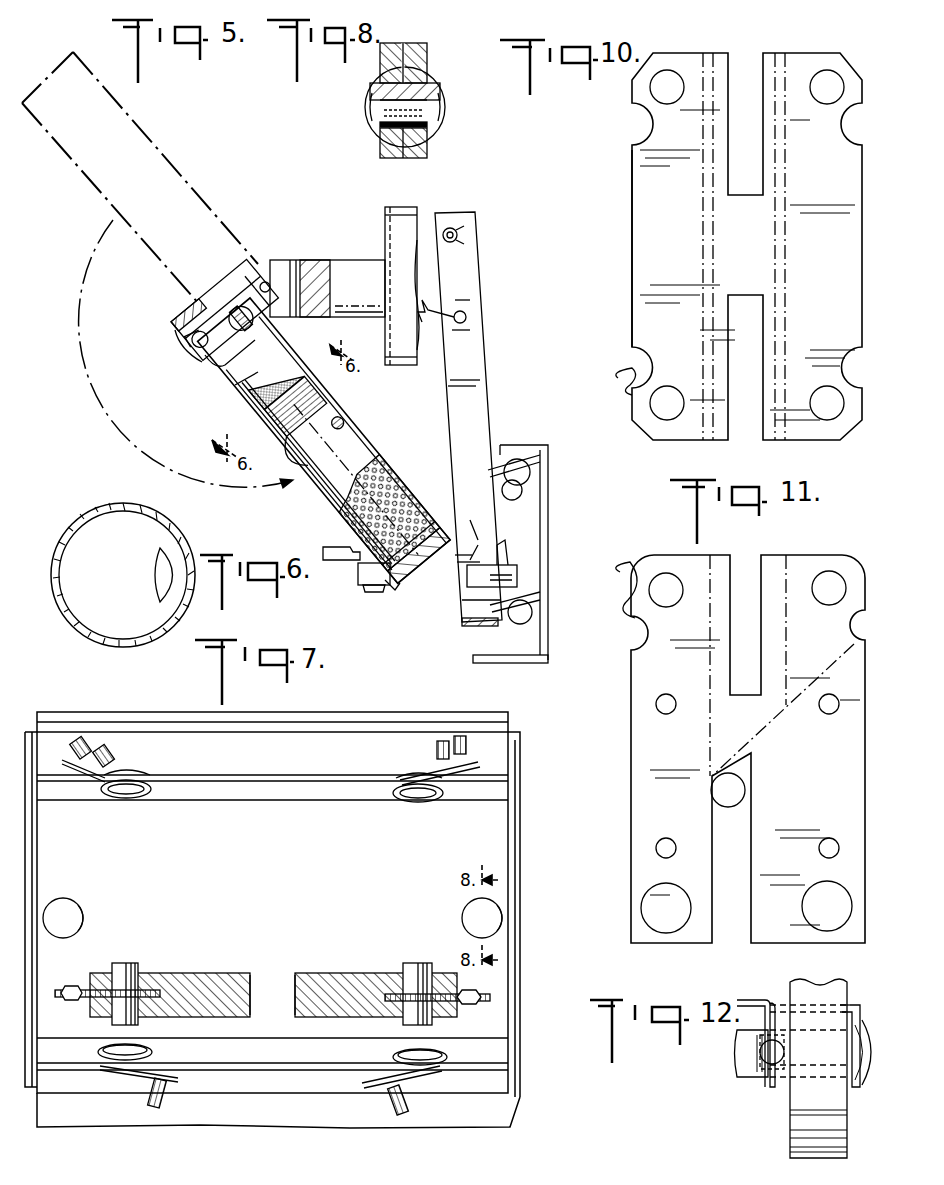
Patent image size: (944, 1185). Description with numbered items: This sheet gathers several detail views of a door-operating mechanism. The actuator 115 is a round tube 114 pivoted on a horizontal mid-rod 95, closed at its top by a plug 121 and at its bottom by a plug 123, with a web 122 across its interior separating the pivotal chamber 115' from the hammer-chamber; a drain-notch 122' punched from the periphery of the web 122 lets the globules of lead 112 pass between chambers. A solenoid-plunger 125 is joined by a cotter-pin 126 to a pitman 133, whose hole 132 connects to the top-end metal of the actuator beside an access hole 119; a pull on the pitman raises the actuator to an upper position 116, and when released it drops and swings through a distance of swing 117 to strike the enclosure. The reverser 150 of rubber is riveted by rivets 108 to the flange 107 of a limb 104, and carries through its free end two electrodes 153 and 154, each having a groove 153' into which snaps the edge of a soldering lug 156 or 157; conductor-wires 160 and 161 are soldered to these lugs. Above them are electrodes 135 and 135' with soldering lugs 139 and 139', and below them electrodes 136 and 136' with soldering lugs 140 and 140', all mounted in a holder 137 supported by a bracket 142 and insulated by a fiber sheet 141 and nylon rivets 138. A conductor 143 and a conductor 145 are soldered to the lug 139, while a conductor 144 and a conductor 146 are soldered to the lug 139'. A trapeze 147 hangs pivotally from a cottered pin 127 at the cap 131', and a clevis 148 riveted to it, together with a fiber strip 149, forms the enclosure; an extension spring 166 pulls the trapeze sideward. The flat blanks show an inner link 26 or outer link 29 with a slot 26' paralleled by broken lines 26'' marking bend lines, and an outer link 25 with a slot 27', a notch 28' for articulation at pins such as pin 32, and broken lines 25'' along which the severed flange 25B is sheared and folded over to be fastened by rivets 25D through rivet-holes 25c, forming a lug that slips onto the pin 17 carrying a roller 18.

In FIG. 5, the upper position 116 is at (205, 178).
In FIG. 5, the solenoid-plunger 125 is at (325, 262).
In FIG. 5, the pivotal chamber 115' is at (356, 295).
In FIG. 5, the cap 131' is at (378, 269).
In FIG. 5, the trapeze 147 is at (470, 350).
In FIG. 5, the cottered pin 127 is at (450, 228).
In FIG. 5, the extension spring 166 is at (425, 300).
In FIG. 5, the electrode 135 is at (534, 552).
In FIG. 7, the electrode 135 is at (412, 807).
In FIG. 5, the clevis 148 is at (487, 539).
In FIG. 5, the electrode 154 is at (497, 560).
In FIG. 7, the electrode 154 is at (123, 962).
In FIG. 5, the electrode 136 is at (475, 618).
In FIG. 7, the electrode 136 is at (428, 1084).
In FIG. 5, the fiber strip 149 is at (475, 622).
In FIG. 5, the actuator 115 is at (324, 440).
In FIG. 5, the globule of lead 112 is at (282, 403).
In FIG. 5, the distance of swing 117 is at (340, 495).
In FIG. 5, the web 122 is at (312, 454).
In FIG. 6, the web 122 is at (108, 574).
In FIG. 5, the drain-notch 122' is at (359, 410).
In FIG. 6, the drain-notch 122' is at (187, 555).
In FIG. 5, the plug 123 is at (430, 578).
In FIG. 5, the mid-rod 95 is at (232, 280).
In FIG. 5, the cotter-pin 126 is at (268, 280).
In FIG. 5, the pitman 133 is at (232, 330).
In FIG. 5, the hole 132 is at (192, 346).
In FIG. 5, the hole 119 is at (230, 358).
In FIG. 5, the plug 121 is at (240, 388).
In FIG. 5, the limb 104 is at (328, 545).
In FIG. 5, the flange 107 is at (358, 578).
In FIG. 5, the rivets 108 is at (368, 592).
In FIG. 5, the reverser 150 is at (395, 595).
In FIG. 7, the reverser 150 is at (292, 970).
In FIG. 6, the round tube 114 is at (112, 505).
In FIG. 8, the fiber sheet 141 is at (403, 43).
In FIG. 8, the bracket 142 is at (420, 52).
In FIG. 8, the holder 137 is at (380, 70).
In FIG. 7, the holder 137 is at (217, 795).
In FIG. 8, the nylon rivets 138 is at (366, 112).
In FIG. 7, the nylon rivets 138 is at (68, 912).
In FIG. 7, the electrode 135' is at (126, 804).
In FIG. 7, the soldering lug 139' is at (81, 797).
In FIG. 7, the conductor 146 is at (82, 740).
In FIG. 7, the conductor 144 is at (108, 745).
In FIG. 7, the conductor 143 is at (440, 748).
In FIG. 7, the conductor 145 is at (466, 748).
In FIG. 7, the soldering lug 139 is at (442, 802).
In FIG. 7, the soldering lug 157 is at (150, 975).
In FIG. 7, the soldering lug 156 is at (390, 1002).
In FIG. 7, the groove 153' is at (279, 972).
In FIG. 7, the electrode 153 is at (434, 933).
In FIG. 7, the conductor-wire 161 is at (76, 985).
In FIG. 7, the conductor-wire 160 is at (470, 1006).
In FIG. 7, the electrode 136' is at (272, 1044).
In FIG. 7, the soldering lug 140' is at (158, 1092).
In FIG. 7, the soldering lug 140 is at (375, 1094).
In FIG. 10, the inner link 26 is at (715, 246).
In FIG. 10, the outer link 29 is at (632, 194).
In FIG. 10, the broken lines 26'' is at (743, 226).
In FIG. 10, the slot 26' is at (746, 222).
In FIG. 10, the notch 28' is at (607, 388).
In FIG. 11, the notch 28' is at (616, 590).
In FIG. 11, the outer link 25 is at (731, 749).
In FIG. 12, the outer link 25 is at (826, 1025).
In FIG. 11, the rivet-holes 25c is at (668, 714).
In FIG. 11, the slot 27' is at (737, 719).
In FIG. 11, the broken lines 25'' is at (774, 750).
In FIG. 11, the severed flange 25B is at (793, 944).
In FIG. 12, the severed flange 25B is at (745, 998).
In FIG. 12, the rivets 25D is at (760, 1048).
In FIG. 12, the pin 17 is at (750, 1078).
In FIG. 12, the pin 32 is at (872, 1070).
In FIG. 12, the roller 18 is at (825, 1158).